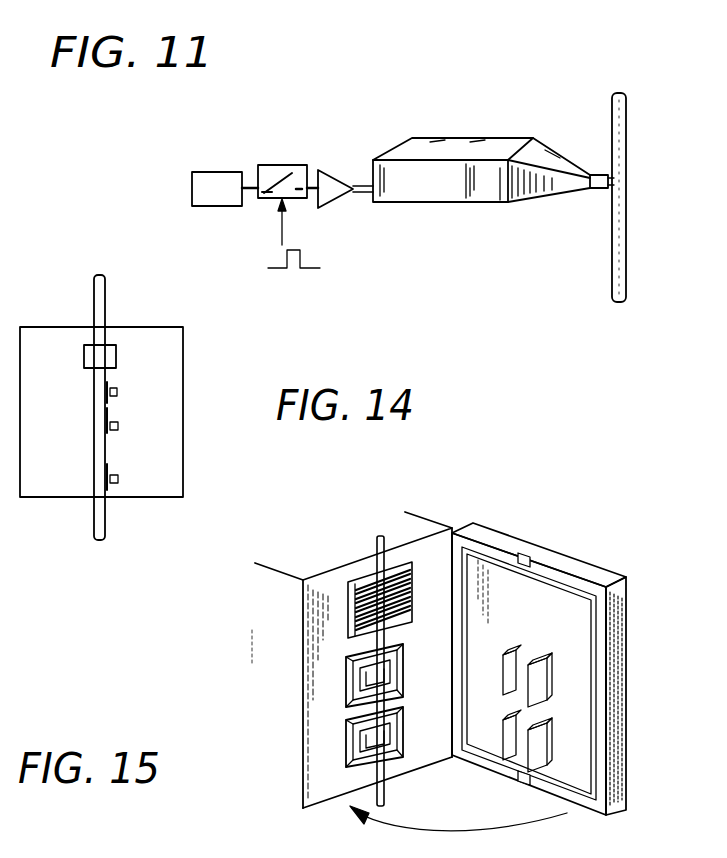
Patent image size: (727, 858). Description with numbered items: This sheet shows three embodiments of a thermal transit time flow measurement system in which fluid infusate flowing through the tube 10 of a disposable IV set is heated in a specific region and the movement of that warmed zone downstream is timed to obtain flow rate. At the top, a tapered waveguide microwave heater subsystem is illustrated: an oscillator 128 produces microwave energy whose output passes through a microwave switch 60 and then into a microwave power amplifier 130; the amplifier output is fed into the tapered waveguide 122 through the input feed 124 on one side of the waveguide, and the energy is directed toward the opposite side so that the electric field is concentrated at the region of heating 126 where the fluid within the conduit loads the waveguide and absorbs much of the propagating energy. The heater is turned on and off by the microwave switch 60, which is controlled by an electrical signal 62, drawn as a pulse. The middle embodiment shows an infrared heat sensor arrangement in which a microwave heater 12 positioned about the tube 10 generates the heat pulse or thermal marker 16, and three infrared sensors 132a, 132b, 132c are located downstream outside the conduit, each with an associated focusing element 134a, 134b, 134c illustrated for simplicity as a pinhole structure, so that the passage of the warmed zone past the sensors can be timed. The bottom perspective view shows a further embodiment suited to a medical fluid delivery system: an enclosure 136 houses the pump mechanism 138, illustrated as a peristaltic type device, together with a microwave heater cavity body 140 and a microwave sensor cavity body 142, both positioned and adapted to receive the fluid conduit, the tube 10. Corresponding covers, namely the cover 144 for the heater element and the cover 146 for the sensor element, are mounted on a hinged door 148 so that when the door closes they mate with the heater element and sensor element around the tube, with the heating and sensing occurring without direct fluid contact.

In FIG. 11, the tube 10 is at (612, 286).
In FIG. 14, the tube 10 is at (94, 284).
In FIG. 15, the tube 10 is at (410, 534).
In FIG. 14, the microwave heater 12 is at (110, 355).
In FIG. 14, the thermal marker 16 is at (91, 511).
In FIG. 11, the microwave switch 60 is at (277, 165).
In FIG. 11, the electrical signal 62 is at (297, 233).
In FIG. 11, the waveguide 122 is at (468, 150).
In FIG. 11, the feed 124 is at (371, 191).
In FIG. 11, the region of heating 126 is at (616, 183).
In FIG. 11, the oscillator 128 is at (224, 172).
In FIG. 11, the microwave power amplifier 130 is at (333, 177).
In FIG. 14, the infrared sensor 132a is at (118, 390).
In FIG. 14, the infrared sensor 132b is at (120, 427).
In FIG. 14, the infrared sensor 132c is at (118, 480).
In FIG. 14, the focusing element 134a is at (110, 399).
In FIG. 14, the focusing element 134b is at (108, 418).
In FIG. 14, the focusing element 134c is at (110, 472).
In FIG. 15, the enclosure 136 is at (291, 614).
In FIG. 15, the pump mechanism 138 is at (359, 592).
In FIG. 15, the microwave heater cavity body 140 is at (346, 682).
In FIG. 15, the microwave sensor cavity body 142 is at (404, 740).
In FIG. 15, the cover for the heater element 144 is at (535, 677).
In FIG. 15, the cover for the sensor element 146 is at (512, 741).
In FIG. 15, the hinged door 148 is at (500, 542).